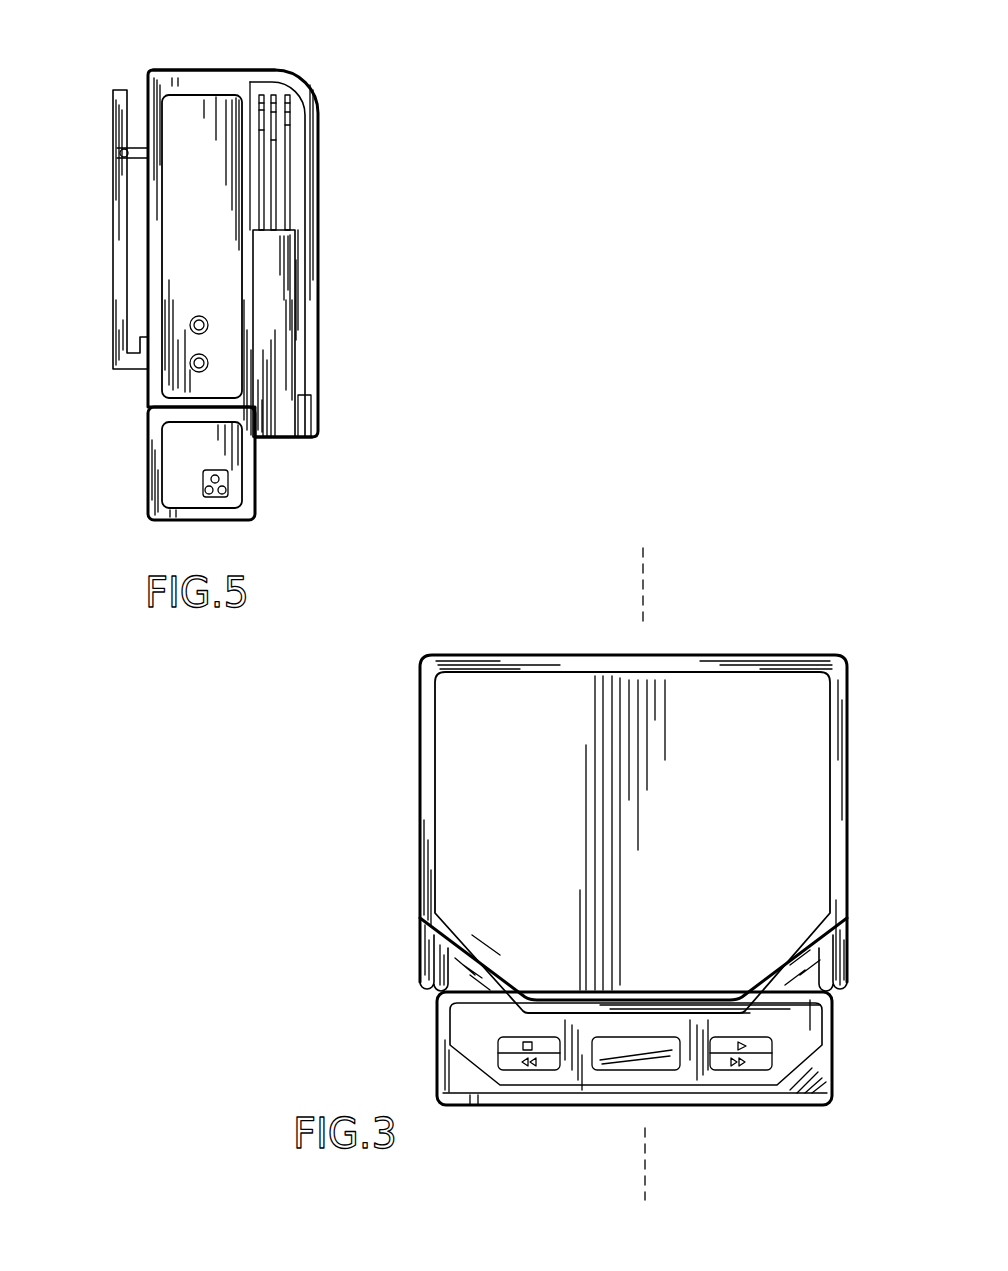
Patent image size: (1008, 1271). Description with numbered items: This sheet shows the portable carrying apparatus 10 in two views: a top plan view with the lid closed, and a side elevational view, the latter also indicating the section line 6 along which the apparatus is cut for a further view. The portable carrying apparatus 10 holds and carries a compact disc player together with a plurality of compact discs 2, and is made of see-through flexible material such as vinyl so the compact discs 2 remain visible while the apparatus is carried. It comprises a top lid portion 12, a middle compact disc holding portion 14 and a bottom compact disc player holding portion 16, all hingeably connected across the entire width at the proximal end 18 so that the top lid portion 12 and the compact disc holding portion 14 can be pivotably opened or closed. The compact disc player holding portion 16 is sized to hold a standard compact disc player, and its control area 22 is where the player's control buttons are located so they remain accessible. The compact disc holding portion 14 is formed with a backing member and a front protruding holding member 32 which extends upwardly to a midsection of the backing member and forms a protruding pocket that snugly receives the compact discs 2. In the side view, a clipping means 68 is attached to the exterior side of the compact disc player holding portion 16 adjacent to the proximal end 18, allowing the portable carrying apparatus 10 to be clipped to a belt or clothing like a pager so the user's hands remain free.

In FIG. 5, the portable carrying apparatus 10 is at (376, 64).
In FIG. 3, the portable carrying apparatus 10 is at (750, 530).
In FIG. 5, the top lid portion 12 is at (318, 198).
In FIG. 3, the top lid portion 12 is at (807, 797).
In FIG. 5, the compact disc holding portion 14 is at (291, 442).
In FIG. 5, the compact disc player holding portion 16 is at (143, 463).
In FIG. 3, the compact disc player holding portion 16 is at (835, 1046).
In FIG. 5, the proximal end 18 is at (202, 70).
In FIG. 5, the compact discs 2 is at (290, 133).
In FIG. 3, the control area 22 is at (793, 1088).
In FIG. 5, the front protruding holding member 32 is at (280, 316).
In FIG. 5, the clipping means 68 is at (113, 213).
In FIG. 3, the section line 6- 6 is at (641, 540).